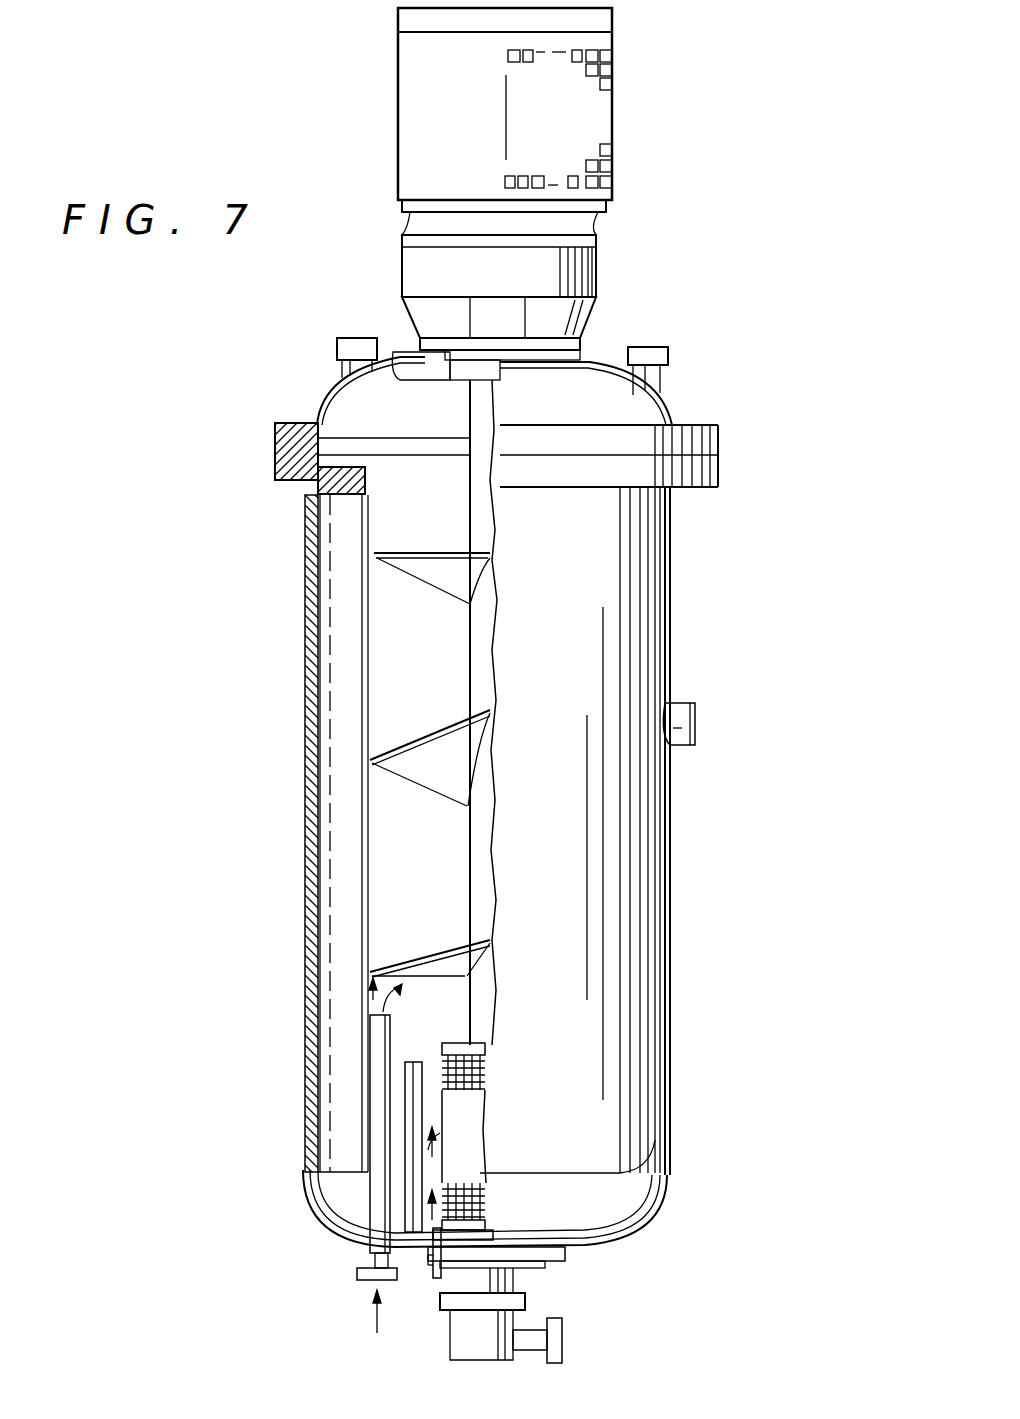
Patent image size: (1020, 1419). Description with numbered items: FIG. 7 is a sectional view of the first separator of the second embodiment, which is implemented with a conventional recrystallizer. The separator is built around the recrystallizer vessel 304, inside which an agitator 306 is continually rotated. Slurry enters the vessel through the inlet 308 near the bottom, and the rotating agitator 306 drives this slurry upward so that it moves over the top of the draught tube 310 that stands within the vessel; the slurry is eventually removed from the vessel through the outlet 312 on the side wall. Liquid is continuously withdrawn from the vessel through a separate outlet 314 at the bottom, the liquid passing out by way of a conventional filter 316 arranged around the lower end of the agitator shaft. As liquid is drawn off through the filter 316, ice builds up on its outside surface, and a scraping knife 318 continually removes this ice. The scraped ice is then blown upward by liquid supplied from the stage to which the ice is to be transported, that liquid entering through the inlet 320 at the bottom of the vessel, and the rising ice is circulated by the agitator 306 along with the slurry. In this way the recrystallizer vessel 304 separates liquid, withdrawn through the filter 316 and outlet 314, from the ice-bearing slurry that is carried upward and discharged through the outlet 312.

The recrystallizer vessel 304 is at (658, 657).
The agitator 306 is at (485, 672).
The inlet 308 is at (367, 1253).
The draught tube 310 is at (385, 1015).
The outlet 312 is at (685, 726).
The outlet 314 is at (563, 1345).
The filter 316 is at (470, 1112).
The scraping knife 318 is at (430, 1140).
The inlet 320 is at (432, 1278).